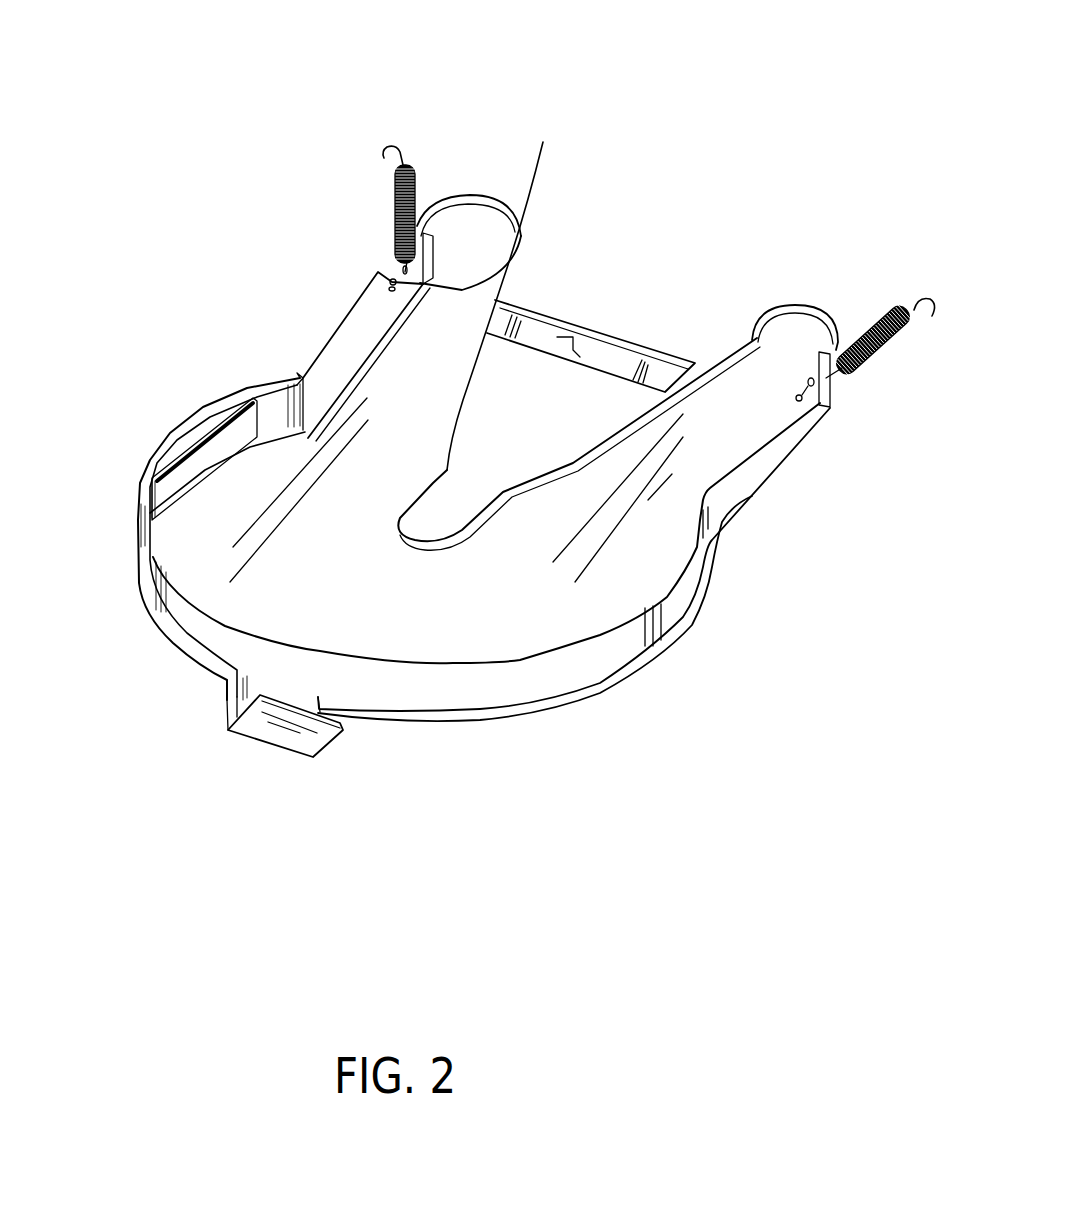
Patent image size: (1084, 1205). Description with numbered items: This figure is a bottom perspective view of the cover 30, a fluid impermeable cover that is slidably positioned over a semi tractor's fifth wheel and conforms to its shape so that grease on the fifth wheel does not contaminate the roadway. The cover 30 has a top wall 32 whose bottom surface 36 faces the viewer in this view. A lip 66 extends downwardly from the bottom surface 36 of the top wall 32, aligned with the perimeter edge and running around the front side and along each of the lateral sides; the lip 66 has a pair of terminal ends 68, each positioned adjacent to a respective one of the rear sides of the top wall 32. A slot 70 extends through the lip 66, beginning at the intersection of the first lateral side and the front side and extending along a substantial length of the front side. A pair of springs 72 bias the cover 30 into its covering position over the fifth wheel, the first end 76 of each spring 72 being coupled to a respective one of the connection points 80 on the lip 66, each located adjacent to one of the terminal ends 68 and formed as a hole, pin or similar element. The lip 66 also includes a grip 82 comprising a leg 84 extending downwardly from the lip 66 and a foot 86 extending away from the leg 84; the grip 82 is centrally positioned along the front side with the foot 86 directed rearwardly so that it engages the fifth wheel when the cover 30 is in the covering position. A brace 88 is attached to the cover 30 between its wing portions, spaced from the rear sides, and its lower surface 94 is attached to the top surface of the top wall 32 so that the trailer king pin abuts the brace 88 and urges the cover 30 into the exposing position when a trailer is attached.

The cover 30 is at (349, 312).
The top wall 32 is at (630, 555).
The bottom surface 36 is at (528, 602).
The lip 66 is at (305, 388).
The terminal ends 68 is at (433, 257).
The slot 70 is at (207, 446).
The springs 72 is at (415, 185).
The first end 76 is at (392, 283).
The connection points 80 is at (799, 398).
The grip 82 is at (228, 730).
The leg 84 is at (230, 700).
The foot 86 is at (305, 742).
The brace 88 is at (657, 350).
The lower surface 94 is at (577, 340).